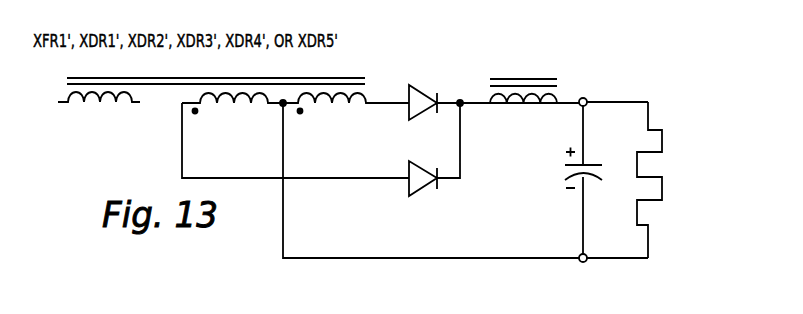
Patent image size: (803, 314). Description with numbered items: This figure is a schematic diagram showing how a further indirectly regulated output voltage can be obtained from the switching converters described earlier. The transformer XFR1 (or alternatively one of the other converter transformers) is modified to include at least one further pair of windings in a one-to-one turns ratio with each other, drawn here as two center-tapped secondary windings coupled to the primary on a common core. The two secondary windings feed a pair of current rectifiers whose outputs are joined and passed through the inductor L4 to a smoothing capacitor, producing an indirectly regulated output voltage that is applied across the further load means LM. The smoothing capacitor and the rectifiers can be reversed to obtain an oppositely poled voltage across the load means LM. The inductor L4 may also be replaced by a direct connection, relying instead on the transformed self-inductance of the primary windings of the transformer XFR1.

The transformer XFR1 is at (233, 90).
The inductor L4 is at (519, 78).
The load means LM is at (661, 155).